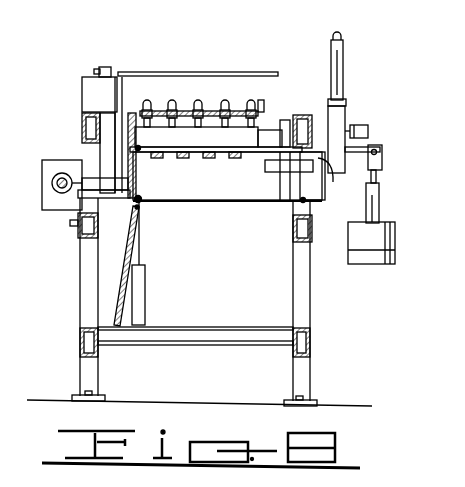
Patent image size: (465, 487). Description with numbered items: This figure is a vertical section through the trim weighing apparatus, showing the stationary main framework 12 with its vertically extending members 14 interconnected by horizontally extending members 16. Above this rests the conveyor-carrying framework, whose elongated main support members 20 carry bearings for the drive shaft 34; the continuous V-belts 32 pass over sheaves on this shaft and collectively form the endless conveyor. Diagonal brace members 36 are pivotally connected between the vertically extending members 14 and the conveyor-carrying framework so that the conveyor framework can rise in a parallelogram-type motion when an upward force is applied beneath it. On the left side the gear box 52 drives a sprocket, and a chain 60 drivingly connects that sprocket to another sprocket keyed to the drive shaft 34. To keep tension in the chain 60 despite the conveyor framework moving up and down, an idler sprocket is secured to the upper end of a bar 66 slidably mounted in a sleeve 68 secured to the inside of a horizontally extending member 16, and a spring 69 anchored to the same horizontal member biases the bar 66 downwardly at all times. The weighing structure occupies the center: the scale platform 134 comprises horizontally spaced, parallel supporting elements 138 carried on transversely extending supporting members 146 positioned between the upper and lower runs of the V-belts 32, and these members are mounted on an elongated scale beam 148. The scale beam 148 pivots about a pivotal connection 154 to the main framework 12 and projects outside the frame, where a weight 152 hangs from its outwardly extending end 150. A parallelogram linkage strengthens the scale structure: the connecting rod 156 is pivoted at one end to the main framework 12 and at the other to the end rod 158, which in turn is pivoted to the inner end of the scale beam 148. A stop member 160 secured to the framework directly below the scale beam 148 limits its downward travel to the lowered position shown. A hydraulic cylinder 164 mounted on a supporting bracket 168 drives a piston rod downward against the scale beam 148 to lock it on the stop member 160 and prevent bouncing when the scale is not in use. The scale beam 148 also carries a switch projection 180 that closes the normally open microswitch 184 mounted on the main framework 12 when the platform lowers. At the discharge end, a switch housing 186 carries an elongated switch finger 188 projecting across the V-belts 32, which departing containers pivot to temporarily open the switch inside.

The stationary main framework 12 is at (312, 306).
The vertically extending members 14 is at (82, 260).
The horizontally extending members 16 is at (78, 226).
The main support members 20 is at (82, 123).
The V-belts 32 is at (190, 106).
The drive shaft 34 is at (120, 132).
The diagonal brace members 36 is at (113, 157).
The gear box 52 is at (62, 160).
The chain 60 is at (134, 204).
The bar 66 is at (143, 247).
The sleeve 68 is at (140, 298).
The spring 69 is at (118, 278).
The first scale platform 134 is at (264, 94).
The supporting elements 138 is at (148, 99).
The transversely extending supporting members 146 is at (172, 136).
The scale beam 148 is at (52, 183).
The outwardly extending end 150 is at (382, 170).
The weight 152 is at (370, 250).
The pivotal connection 154 is at (312, 140).
The connecting rod 156 is at (185, 200).
The end rod 158 is at (138, 178).
The stop member 160 is at (278, 165).
The hydraulic cylinder 164 is at (343, 66).
The supporting bracket 168 is at (346, 115).
The switch projection 180 is at (324, 170).
The microswitch 184 is at (325, 196).
The switch housing 186 is at (112, 103).
The switch finger 188 is at (184, 72).